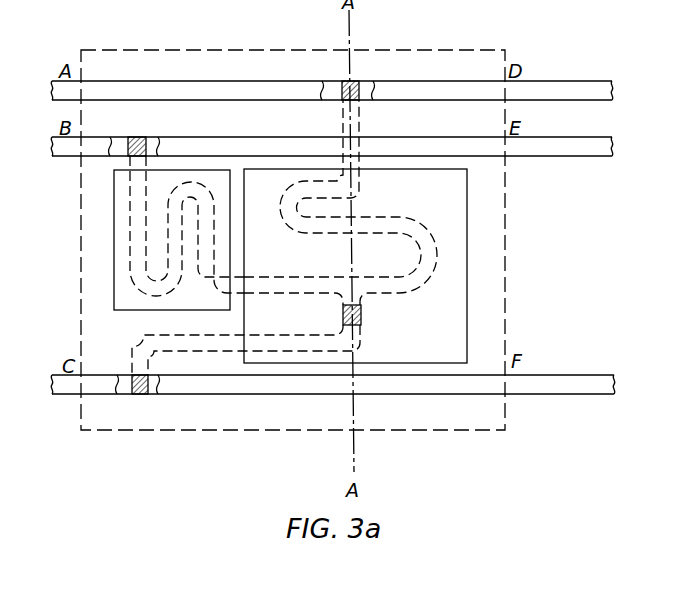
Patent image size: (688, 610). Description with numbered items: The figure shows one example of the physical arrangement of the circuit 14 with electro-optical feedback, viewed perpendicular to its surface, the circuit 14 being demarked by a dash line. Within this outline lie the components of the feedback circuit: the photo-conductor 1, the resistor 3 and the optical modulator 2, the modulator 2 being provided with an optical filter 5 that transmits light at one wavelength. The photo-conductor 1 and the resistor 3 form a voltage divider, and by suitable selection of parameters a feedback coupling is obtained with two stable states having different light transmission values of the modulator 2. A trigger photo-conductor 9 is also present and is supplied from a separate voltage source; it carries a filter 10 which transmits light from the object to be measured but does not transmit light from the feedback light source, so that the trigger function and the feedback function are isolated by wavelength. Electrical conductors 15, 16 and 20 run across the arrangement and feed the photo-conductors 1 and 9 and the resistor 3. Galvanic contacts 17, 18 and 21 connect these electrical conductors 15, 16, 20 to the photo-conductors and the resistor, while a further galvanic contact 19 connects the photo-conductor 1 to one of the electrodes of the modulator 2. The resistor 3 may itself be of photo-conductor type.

The photo-conductor 1 is at (433, 255).
The optical modulator 2 is at (355, 266).
The optical filter 5 is at (452, 305).
The resistor 3 is at (220, 343).
The photo-conductor 9 is at (135, 233).
The filter 10 is at (120, 277).
The circuit with electro-optical feedback 14 is at (443, 46).
The electrical conductor 15 is at (108, 92).
The electrical conductor 16 is at (203, 147).
The galvanic contact 17 is at (140, 143).
The galvanic contact 18 is at (357, 85).
The galvanic contact 19 is at (368, 323).
The electrical conductor 20 is at (290, 385).
The galvanic contact 21 is at (137, 394).